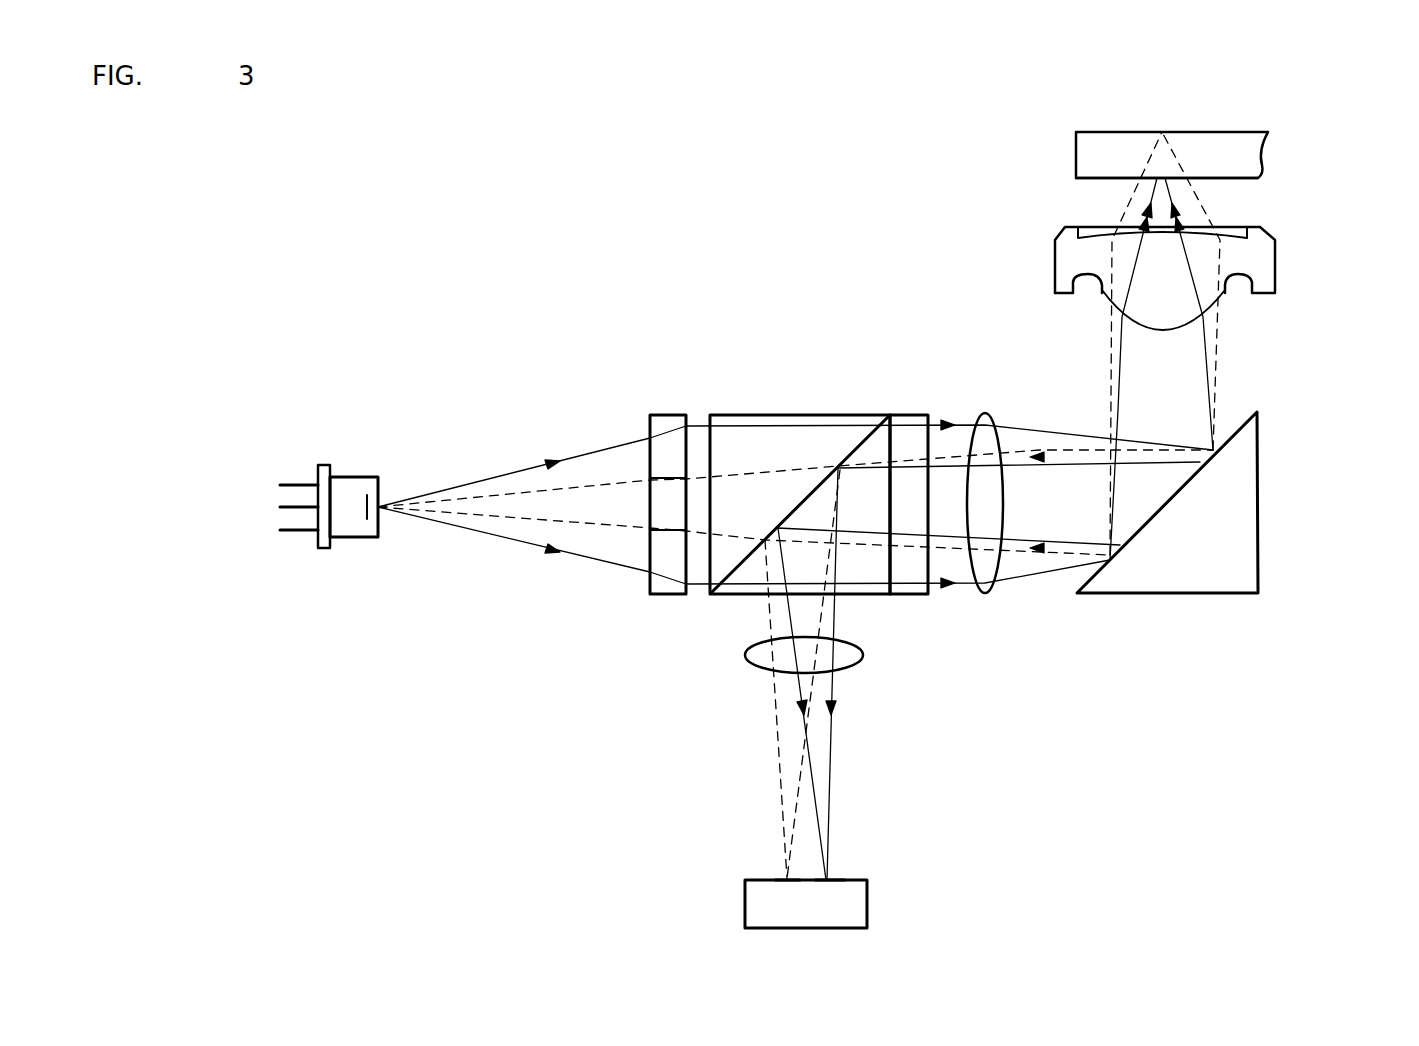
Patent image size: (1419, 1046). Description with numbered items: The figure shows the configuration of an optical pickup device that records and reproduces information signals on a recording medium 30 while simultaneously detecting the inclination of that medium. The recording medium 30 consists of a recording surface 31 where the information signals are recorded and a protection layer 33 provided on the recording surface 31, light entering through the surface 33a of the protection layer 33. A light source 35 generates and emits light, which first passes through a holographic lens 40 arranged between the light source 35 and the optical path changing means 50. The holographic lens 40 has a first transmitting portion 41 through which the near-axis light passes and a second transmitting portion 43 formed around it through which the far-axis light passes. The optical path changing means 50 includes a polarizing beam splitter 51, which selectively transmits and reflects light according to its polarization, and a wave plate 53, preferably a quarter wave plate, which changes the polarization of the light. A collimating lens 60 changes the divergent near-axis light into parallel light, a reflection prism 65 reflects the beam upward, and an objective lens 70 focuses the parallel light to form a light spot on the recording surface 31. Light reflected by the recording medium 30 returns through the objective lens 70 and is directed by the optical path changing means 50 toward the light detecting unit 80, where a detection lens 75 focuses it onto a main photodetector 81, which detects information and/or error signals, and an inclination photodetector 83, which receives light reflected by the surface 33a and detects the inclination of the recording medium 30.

The recording medium 30 is at (1208, 161).
The recording surface 31 is at (1157, 156).
The protection layer 33 is at (1093, 150).
The surface of the protection layer 33a is at (1090, 178).
The light source 35 is at (325, 548).
The holographic lens 40 is at (588, 473).
The first transmitting portion 41 is at (650, 503).
The second transmitting portion 43 is at (650, 463).
The optical path changing means 50 is at (821, 444).
The polarizing beam splitter 51 is at (770, 415).
The wave plate 53 is at (912, 415).
The collimating lens 60 is at (980, 420).
The reflection prism 65 is at (1258, 473).
The objective lens 70 is at (1275, 263).
The detection lens 75 is at (863, 655).
The light detecting unit 80 is at (788, 868).
The main photodetector 81 is at (788, 878).
The inclination photodetector 83 is at (827, 880).